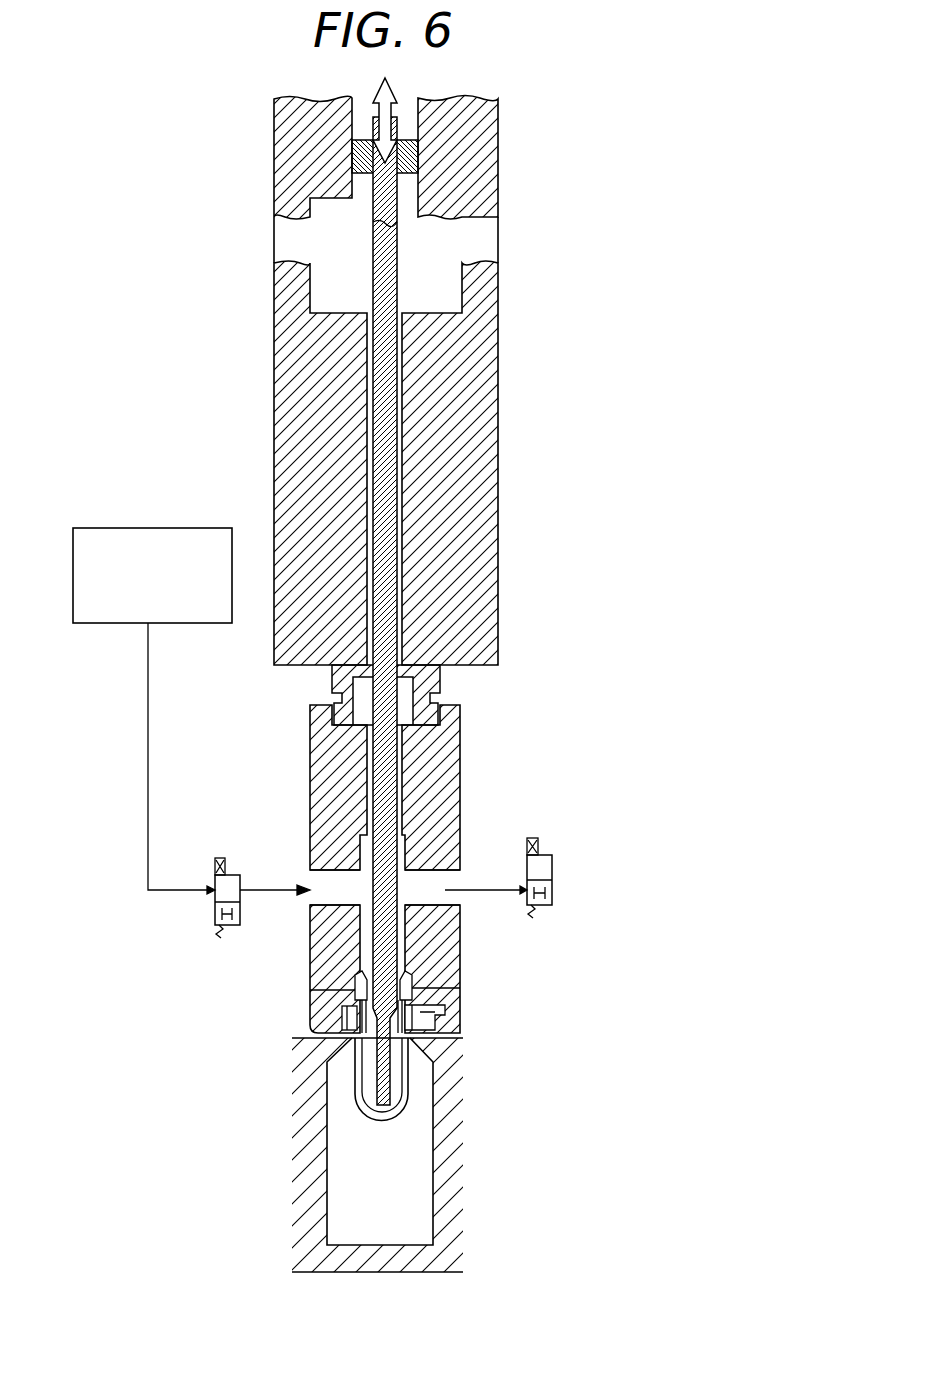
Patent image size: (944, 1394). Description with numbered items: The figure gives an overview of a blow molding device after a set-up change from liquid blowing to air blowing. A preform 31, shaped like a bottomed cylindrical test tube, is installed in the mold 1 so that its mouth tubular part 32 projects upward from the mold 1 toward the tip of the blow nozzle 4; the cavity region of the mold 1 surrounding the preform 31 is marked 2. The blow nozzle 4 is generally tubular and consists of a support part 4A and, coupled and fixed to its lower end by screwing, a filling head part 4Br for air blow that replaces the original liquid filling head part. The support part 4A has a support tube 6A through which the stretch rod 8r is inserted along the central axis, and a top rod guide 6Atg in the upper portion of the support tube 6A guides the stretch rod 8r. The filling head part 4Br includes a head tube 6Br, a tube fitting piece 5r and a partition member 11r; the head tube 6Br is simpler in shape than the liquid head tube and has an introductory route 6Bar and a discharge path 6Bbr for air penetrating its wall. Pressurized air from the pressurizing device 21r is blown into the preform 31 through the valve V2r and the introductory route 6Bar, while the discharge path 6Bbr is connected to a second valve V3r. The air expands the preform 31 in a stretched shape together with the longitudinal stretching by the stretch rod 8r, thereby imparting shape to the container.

The mold 1 is at (421, 1156).
The mold cavity 2 is at (440, 1212).
The blow nozzle 4 is at (683, 512).
The support part 4A is at (589, 105).
The filling head part for air blow 4Br is at (608, 1033).
The tube fitting piece 5r is at (360, 990).
The support tube 6A is at (287, 408).
The top rod guide 6Atg is at (420, 150).
The head tube 6Br is at (330, 778).
The introductory route 6Bar is at (310, 885).
The discharge path 6Bbr is at (465, 883).
The stretch rod 8r is at (372, 655).
The partition member 11r is at (312, 1022).
The pressurizing device 21r is at (153, 520).
The preform 31 is at (410, 1092).
The mouth tubular part 32 is at (440, 1022).
The valve V2r is at (212, 918).
The discharge valve V3r is at (553, 907).